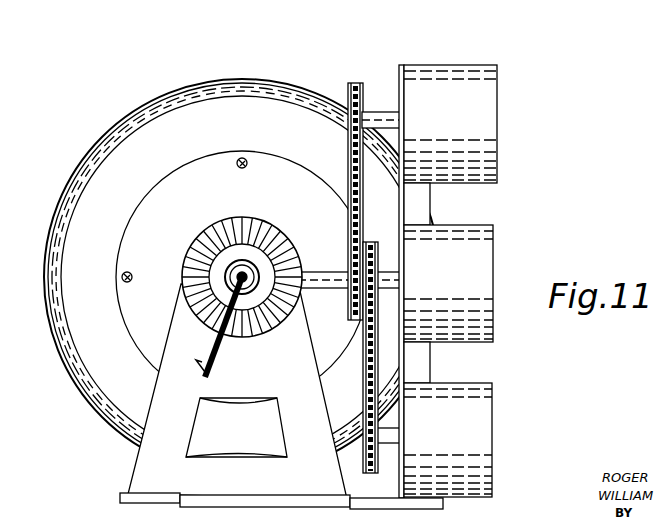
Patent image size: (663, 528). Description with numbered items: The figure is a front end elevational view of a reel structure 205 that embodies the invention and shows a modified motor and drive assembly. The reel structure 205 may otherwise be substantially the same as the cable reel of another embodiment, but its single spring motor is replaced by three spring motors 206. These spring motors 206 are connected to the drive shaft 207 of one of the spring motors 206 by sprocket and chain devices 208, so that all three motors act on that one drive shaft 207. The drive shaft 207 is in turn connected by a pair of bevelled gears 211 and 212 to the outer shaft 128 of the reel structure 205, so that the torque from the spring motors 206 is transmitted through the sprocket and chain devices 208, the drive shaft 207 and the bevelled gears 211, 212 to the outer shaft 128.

The reel structure 205 is at (152, 56).
The spring motors 206 is at (498, 109).
The drive shaft 207 is at (330, 276).
The sprocket and chain devices 208 is at (370, 241).
The bevelled gear 211 is at (298, 290).
The bevelled gear 212 is at (253, 222).
The outer shaft 128 is at (228, 270).